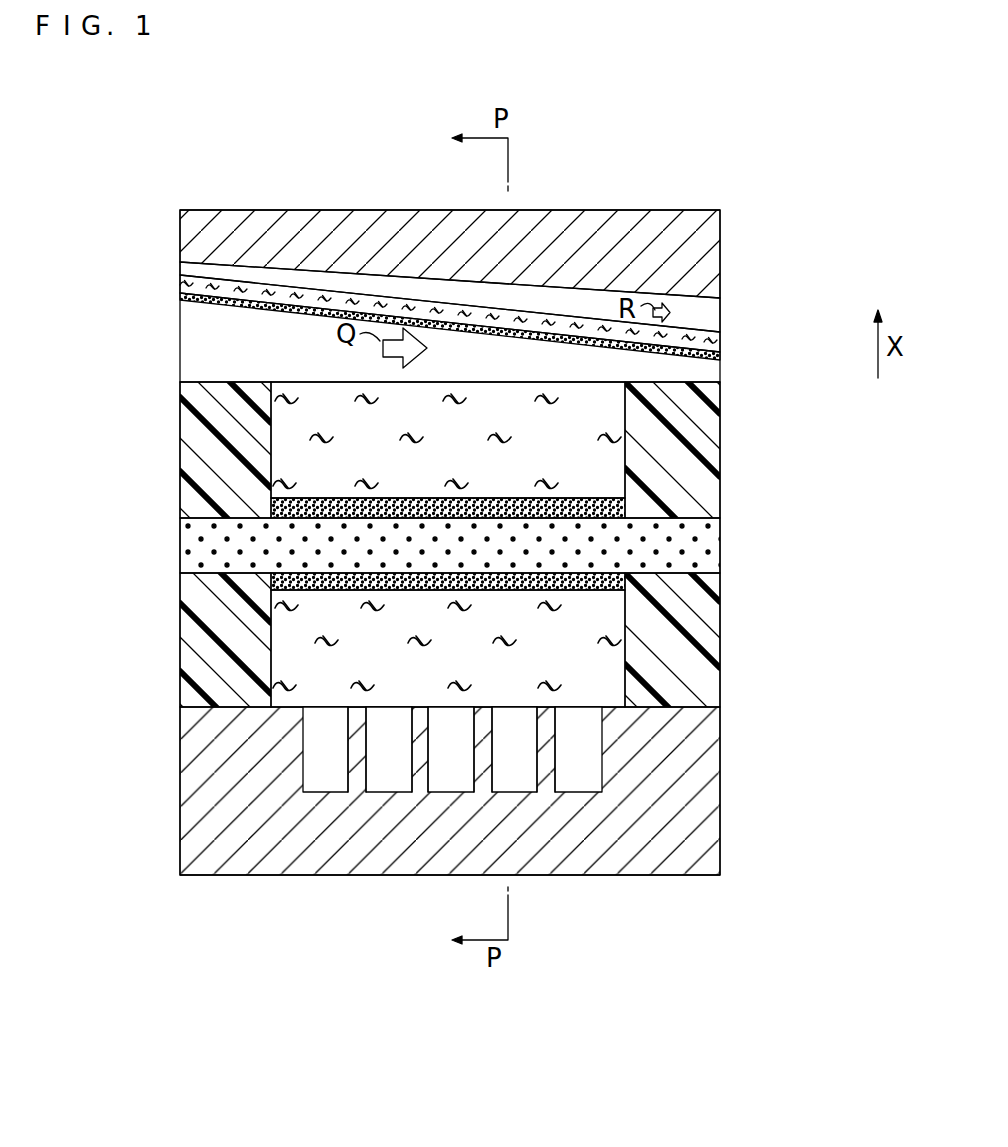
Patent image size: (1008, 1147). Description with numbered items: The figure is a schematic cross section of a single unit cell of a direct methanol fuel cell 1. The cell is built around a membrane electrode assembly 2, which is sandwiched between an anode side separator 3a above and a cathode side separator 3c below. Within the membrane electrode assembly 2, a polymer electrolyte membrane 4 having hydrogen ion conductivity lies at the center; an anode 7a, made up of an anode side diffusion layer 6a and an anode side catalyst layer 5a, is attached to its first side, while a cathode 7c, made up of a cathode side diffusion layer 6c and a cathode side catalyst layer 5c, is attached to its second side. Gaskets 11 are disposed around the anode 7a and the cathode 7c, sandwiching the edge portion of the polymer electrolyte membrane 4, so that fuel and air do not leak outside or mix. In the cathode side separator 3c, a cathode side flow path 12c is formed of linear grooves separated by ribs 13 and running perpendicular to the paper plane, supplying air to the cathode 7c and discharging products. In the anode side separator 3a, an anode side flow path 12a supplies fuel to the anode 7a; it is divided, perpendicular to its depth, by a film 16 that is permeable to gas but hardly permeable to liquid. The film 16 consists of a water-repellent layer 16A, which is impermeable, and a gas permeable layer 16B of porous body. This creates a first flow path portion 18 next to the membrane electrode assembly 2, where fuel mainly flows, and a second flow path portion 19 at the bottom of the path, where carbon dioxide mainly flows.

The direct methanol fuel cell 1 is at (792, 964).
The membrane electrode assembly 2 is at (522, 544).
The anode side separator 3a is at (672, 250).
The cathode side separator 3c is at (478, 817).
The polymer electrolyte membrane 4 is at (690, 548).
The anode side catalyst layer 5a is at (625, 506).
The cathode side catalyst layer 5c is at (620, 582).
The anode side diffusion layer 6a is at (600, 419).
The cathode side diffusion layer 6c is at (600, 672).
The anode 7a is at (552, 450).
The cathode 7c is at (551, 640).
The gasket 11 is at (206, 468).
The anode side flow path 12a is at (470, 340).
The cathode side flow path 12c is at (317, 780).
The ribs 13 is at (358, 745).
The film 16 is at (509, 325).
The water-repellent layer 16A is at (722, 357).
The gas permeable layer 16B is at (722, 335).
The first flow path portion 18 is at (424, 387).
The second flow path portion 19 is at (708, 312).